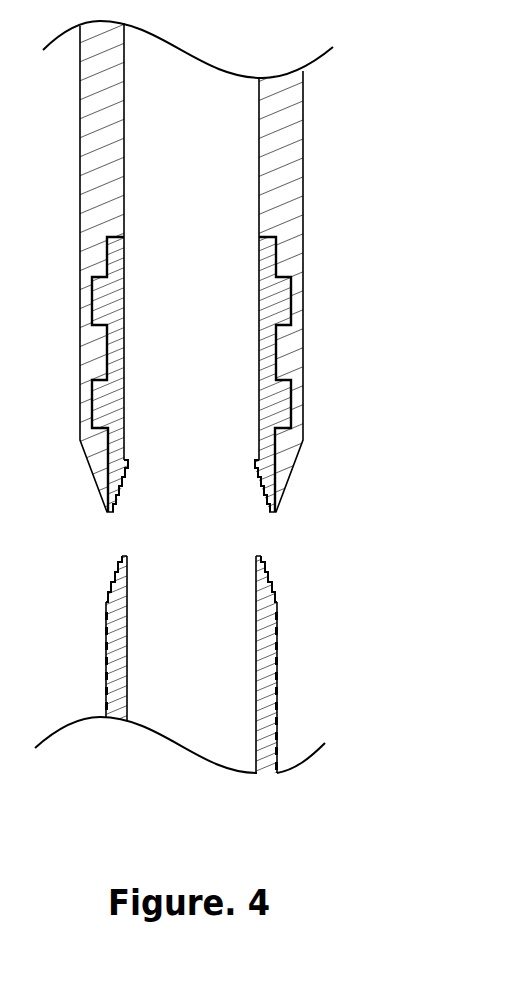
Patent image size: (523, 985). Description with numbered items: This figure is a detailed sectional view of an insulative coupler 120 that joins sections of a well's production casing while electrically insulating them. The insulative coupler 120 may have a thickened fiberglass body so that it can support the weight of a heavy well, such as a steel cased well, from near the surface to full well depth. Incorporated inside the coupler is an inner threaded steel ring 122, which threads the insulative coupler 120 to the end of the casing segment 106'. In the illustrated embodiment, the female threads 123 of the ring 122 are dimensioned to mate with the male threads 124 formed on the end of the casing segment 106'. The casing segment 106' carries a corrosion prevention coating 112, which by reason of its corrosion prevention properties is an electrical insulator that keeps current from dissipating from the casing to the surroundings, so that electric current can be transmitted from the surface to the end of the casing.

The insulative coupler 120 is at (302, 198).
The inner threaded steel ring 122 is at (273, 450).
The female threads 123 is at (123, 472).
The male threads 124 is at (265, 578).
The casing segment 106' is at (205, 664).
The corrosion prevention coating 112 is at (277, 735).